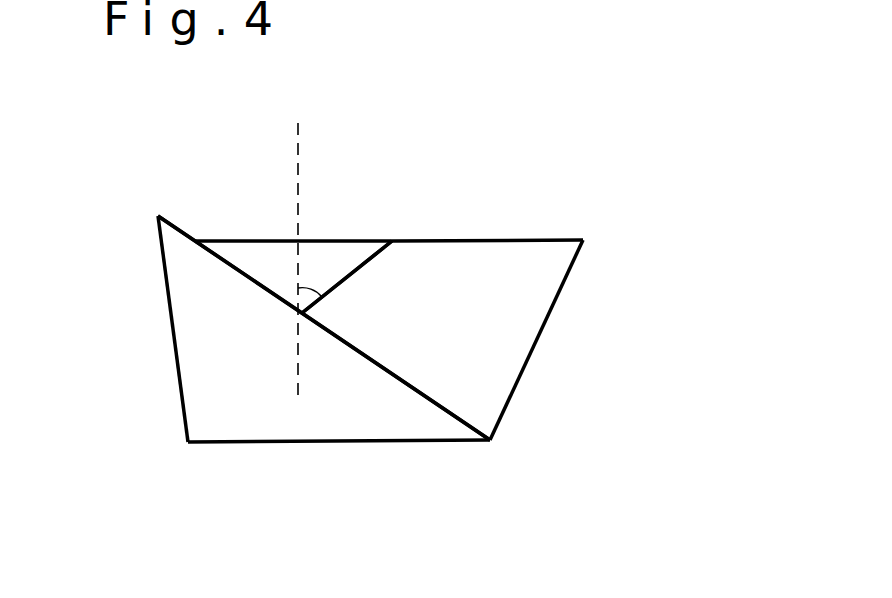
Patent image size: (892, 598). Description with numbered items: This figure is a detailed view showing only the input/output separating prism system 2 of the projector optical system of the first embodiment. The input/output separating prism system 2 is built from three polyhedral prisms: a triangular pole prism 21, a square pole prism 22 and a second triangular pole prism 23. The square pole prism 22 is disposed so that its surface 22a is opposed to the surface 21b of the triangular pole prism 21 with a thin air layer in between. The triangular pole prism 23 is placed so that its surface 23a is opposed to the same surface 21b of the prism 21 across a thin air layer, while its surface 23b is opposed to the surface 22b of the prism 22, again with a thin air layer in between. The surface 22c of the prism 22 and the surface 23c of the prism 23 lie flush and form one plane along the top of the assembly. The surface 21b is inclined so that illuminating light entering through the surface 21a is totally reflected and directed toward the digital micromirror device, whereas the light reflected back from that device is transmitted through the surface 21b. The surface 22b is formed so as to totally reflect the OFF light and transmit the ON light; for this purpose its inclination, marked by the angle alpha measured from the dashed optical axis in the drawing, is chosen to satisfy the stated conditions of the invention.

The input/output separating prism system 2 is at (417, 307).
The triangular pole prism 21 is at (336, 374).
The surface 21a is at (188, 401).
The surface 21b is at (424, 402).
The square pole prism 22 is at (473, 278).
The surface 22a is at (459, 407).
The surface 22b is at (378, 260).
The surface 22c is at (542, 237).
The triangular pole prism 23 is at (300, 240).
The surface 23a is at (218, 246).
The surface 23b is at (358, 265).
The surface 23c is at (313, 238).